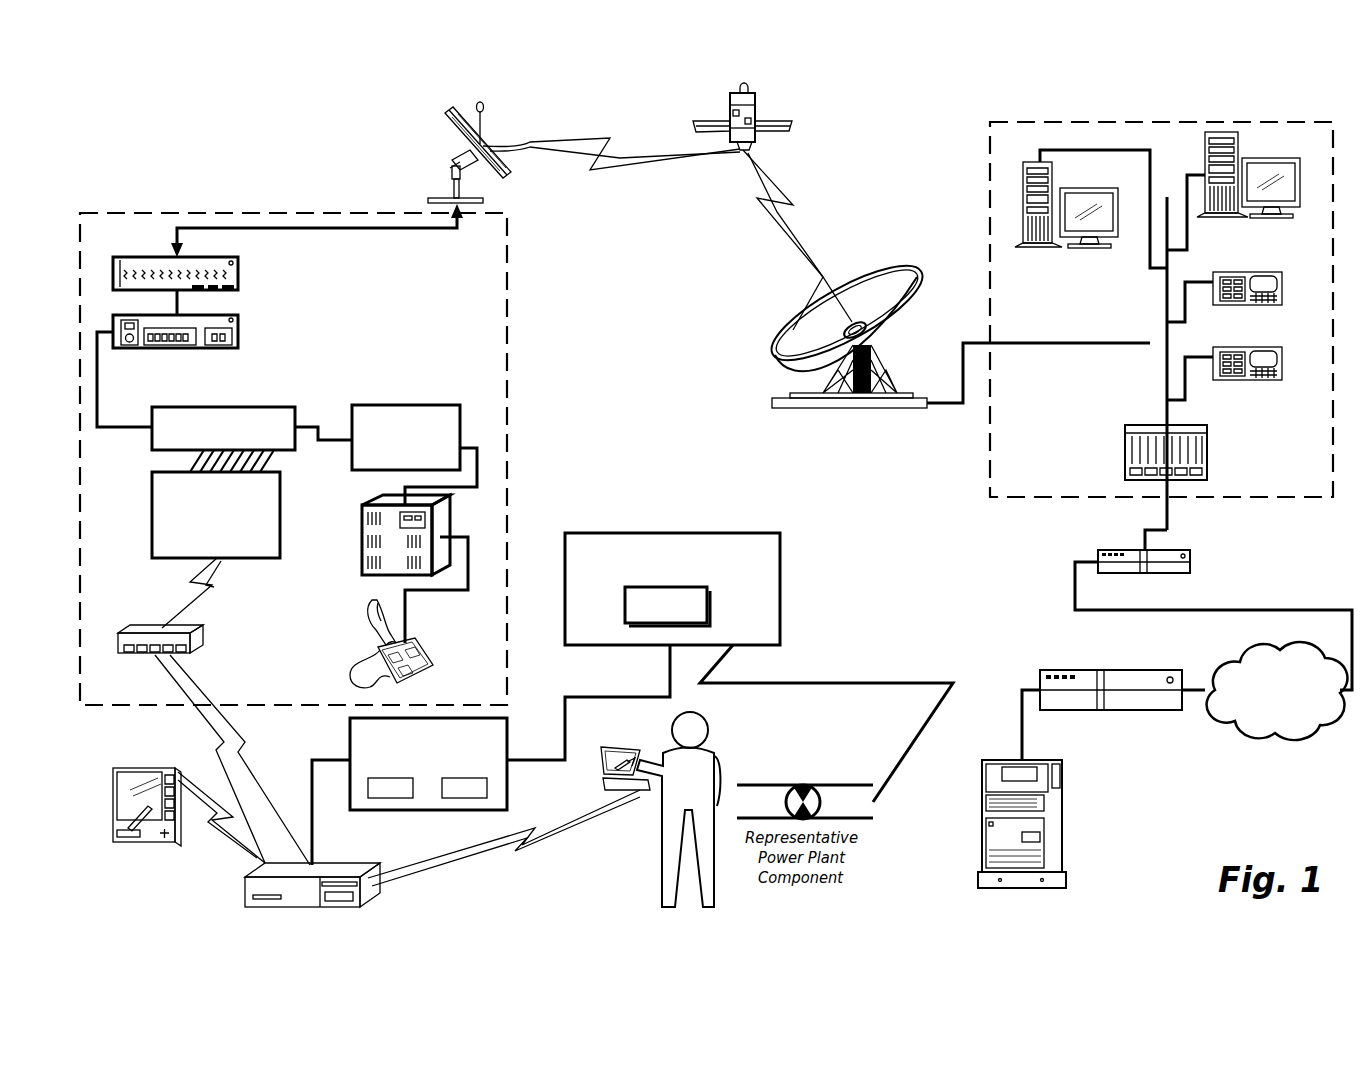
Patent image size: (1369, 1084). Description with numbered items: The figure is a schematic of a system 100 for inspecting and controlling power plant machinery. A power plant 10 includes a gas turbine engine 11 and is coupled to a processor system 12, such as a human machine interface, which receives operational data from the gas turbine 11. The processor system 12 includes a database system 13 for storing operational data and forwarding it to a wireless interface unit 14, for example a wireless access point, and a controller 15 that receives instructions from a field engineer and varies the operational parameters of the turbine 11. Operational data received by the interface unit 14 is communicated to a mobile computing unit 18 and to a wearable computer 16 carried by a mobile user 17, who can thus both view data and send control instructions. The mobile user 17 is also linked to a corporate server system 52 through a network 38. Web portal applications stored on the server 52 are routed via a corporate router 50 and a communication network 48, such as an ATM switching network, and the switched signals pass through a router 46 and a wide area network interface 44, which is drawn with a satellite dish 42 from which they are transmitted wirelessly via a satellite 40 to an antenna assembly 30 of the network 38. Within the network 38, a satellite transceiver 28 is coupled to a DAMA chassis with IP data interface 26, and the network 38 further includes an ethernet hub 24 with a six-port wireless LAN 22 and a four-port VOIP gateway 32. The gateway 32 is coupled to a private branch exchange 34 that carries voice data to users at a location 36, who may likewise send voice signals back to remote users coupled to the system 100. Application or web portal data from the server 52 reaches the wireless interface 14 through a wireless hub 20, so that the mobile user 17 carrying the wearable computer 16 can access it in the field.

The power plant 10 is at (722, 533).
The gas turbine engine 11 is at (708, 607).
The processor system 12 is at (507, 743).
The database system 13 is at (393, 788).
The controller 15 is at (462, 788).
The wireless interface unit 14 is at (245, 880).
The wearable computer 16 is at (608, 750).
The mobile user 17 is at (668, 855).
The mobile computing unit 18 is at (113, 797).
The wireless hub 20 is at (123, 640).
The wireless LAN 22 is at (152, 537).
The ethernet hub 24 is at (152, 440).
The DAMA chassis with IP data interface 26 is at (240, 332).
The satellite transceiver 28 is at (158, 256).
The antenna assembly 30 is at (455, 148).
The VOIP gateway 32 is at (415, 405).
The private-branch exchange 34 is at (362, 535).
The location of users 36 is at (412, 648).
The network 38 is at (507, 318).
The satellite 40 is at (730, 115).
The satellite dish 42 is at (783, 352).
The wide area network interface 44 is at (1140, 123).
The router 46 is at (1190, 562).
The communication network 48 is at (1225, 722).
The corporate router 50 is at (1082, 670).
The corporate server system 52 is at (1063, 830).
The system 100 is at (920, 121).